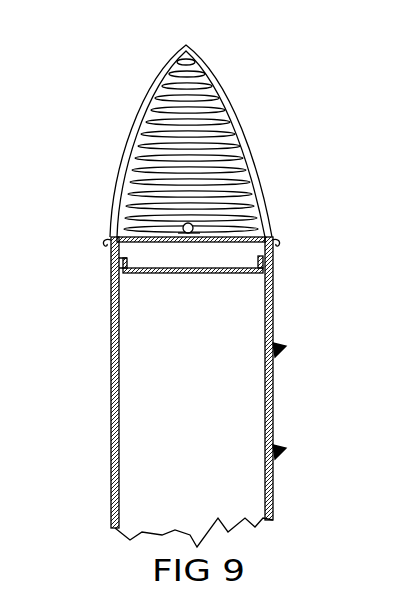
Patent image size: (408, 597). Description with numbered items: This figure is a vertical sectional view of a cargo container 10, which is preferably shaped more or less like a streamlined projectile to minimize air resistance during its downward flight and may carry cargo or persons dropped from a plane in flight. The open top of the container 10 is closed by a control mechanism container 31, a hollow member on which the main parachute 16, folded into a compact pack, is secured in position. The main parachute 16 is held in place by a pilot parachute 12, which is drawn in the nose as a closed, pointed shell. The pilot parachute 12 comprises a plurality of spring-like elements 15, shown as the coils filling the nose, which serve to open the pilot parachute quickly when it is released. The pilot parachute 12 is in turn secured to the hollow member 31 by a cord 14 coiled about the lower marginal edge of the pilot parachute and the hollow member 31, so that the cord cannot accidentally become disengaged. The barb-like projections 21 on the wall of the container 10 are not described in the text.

The cargo container 10 is at (112, 379).
The pilot parachute 12 is at (215, 68).
The cord 14 is at (273, 242).
The spring-like elements 15 is at (131, 124).
The main parachute 16 is at (228, 148).
The barbs 21 is at (279, 452).
The control mechanism container 31 is at (276, 246).